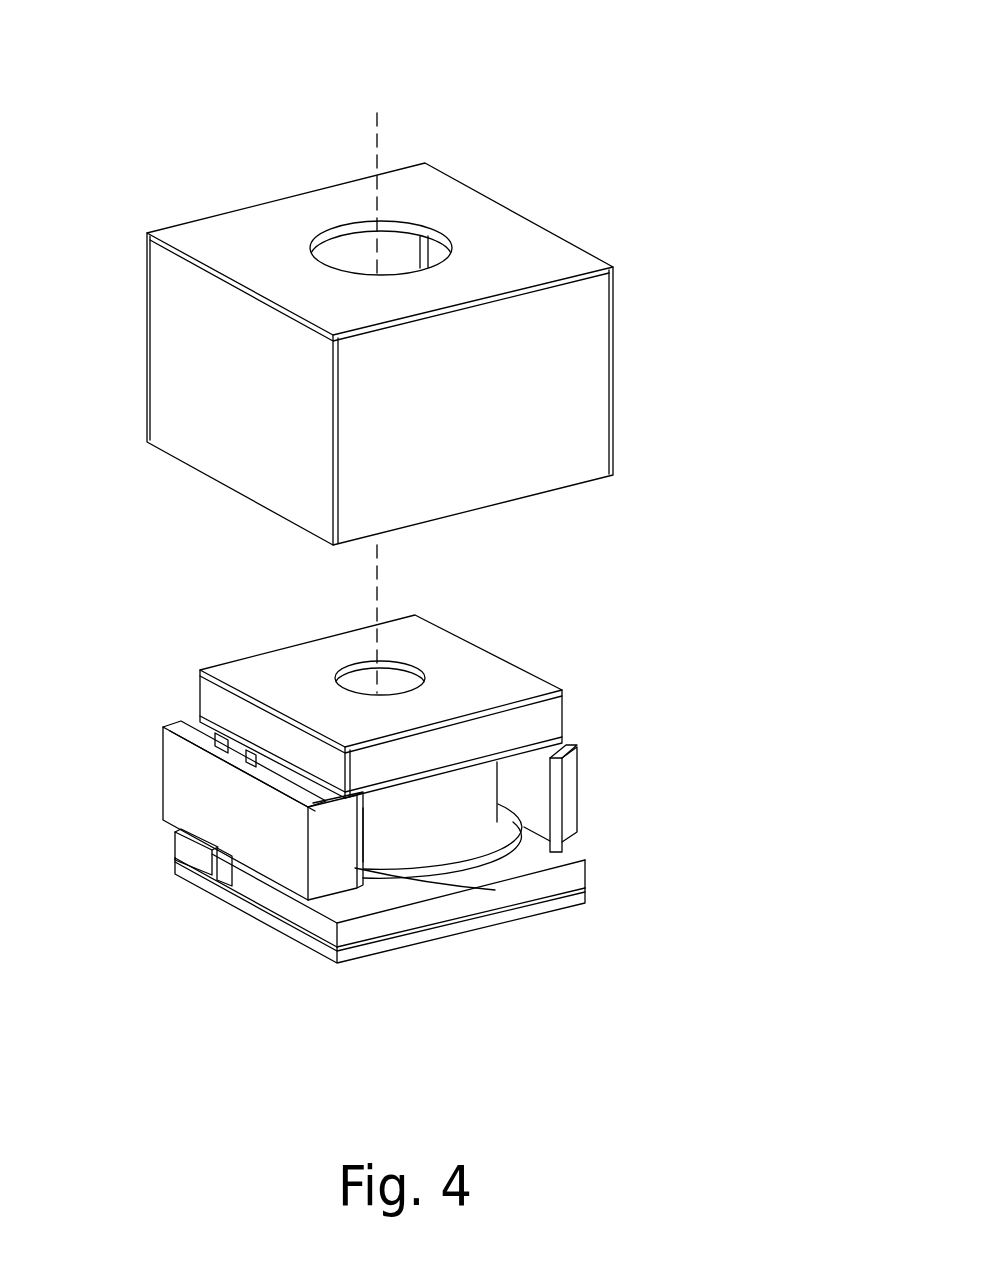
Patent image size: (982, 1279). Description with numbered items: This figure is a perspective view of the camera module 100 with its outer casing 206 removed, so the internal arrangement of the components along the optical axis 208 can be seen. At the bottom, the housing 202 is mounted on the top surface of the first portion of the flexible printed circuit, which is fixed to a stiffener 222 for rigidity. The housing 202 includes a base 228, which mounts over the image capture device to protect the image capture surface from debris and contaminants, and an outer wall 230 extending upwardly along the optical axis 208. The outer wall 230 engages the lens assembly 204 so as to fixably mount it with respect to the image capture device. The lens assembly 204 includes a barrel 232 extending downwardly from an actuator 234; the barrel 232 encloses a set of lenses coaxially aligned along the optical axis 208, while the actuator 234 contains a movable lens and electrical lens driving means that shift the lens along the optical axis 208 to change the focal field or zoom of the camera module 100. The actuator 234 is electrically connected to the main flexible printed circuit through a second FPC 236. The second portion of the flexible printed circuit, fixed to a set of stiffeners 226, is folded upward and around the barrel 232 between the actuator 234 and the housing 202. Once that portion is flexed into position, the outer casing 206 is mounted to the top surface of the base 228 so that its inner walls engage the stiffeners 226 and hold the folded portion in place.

The camera module 100 is at (804, 136).
The housing 202 is at (395, 917).
The lens assembly 204 is at (565, 662).
The outer casing 206 is at (684, 302).
The optical axis 208 is at (375, 144).
The stiffener 222 is at (327, 953).
The stiffeners 226 is at (175, 782).
The base 228 is at (553, 882).
The outer wall 230 is at (473, 858).
The barrel 232 is at (393, 838).
The actuator 234 is at (303, 643).
The second FPC 236 is at (217, 875).